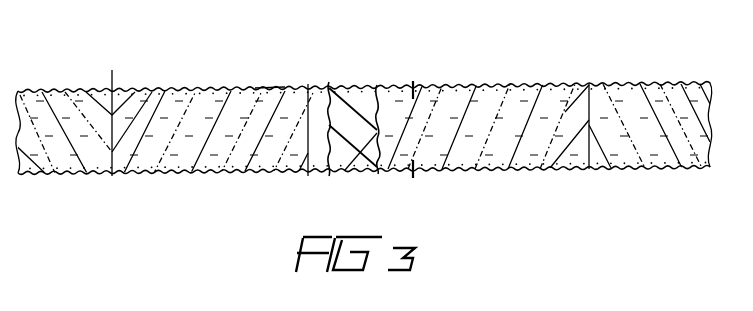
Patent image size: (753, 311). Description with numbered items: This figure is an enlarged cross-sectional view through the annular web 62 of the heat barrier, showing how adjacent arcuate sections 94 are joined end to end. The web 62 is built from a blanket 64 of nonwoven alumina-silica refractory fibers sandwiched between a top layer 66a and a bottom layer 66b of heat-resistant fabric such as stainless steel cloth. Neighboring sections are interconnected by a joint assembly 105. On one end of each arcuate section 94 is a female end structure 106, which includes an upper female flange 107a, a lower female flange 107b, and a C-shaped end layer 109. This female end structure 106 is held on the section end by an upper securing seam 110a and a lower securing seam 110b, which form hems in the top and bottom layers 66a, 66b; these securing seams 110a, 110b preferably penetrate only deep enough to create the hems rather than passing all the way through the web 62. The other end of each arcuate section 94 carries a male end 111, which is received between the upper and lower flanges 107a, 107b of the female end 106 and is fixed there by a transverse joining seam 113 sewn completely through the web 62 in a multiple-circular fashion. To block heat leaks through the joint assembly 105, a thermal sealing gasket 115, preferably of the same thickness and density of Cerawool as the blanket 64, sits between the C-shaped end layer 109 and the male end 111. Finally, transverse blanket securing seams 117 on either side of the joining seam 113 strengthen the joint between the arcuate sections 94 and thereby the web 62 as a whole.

The annular web 62 is at (159, 66).
The blanket 64 is at (133, 148).
The top layer 66a is at (187, 88).
The bottom layer 66b is at (243, 173).
The arcuate sections 94 is at (90, 80).
The joint assembly 105 is at (366, 73).
The female end structure 106 is at (382, 90).
The upper female flange 107a is at (343, 80).
The lower female flange 107b is at (305, 180).
The C-shaped end layer 109 is at (385, 150).
The upper securing seam 110a is at (415, 92).
The lower securing seam 110b is at (415, 172).
The male end 111 is at (267, 78).
The transverse joining seam 113 is at (308, 84).
The thermal sealing gasket 115 is at (346, 160).
The transverse blanket securing seams 117 is at (112, 72).